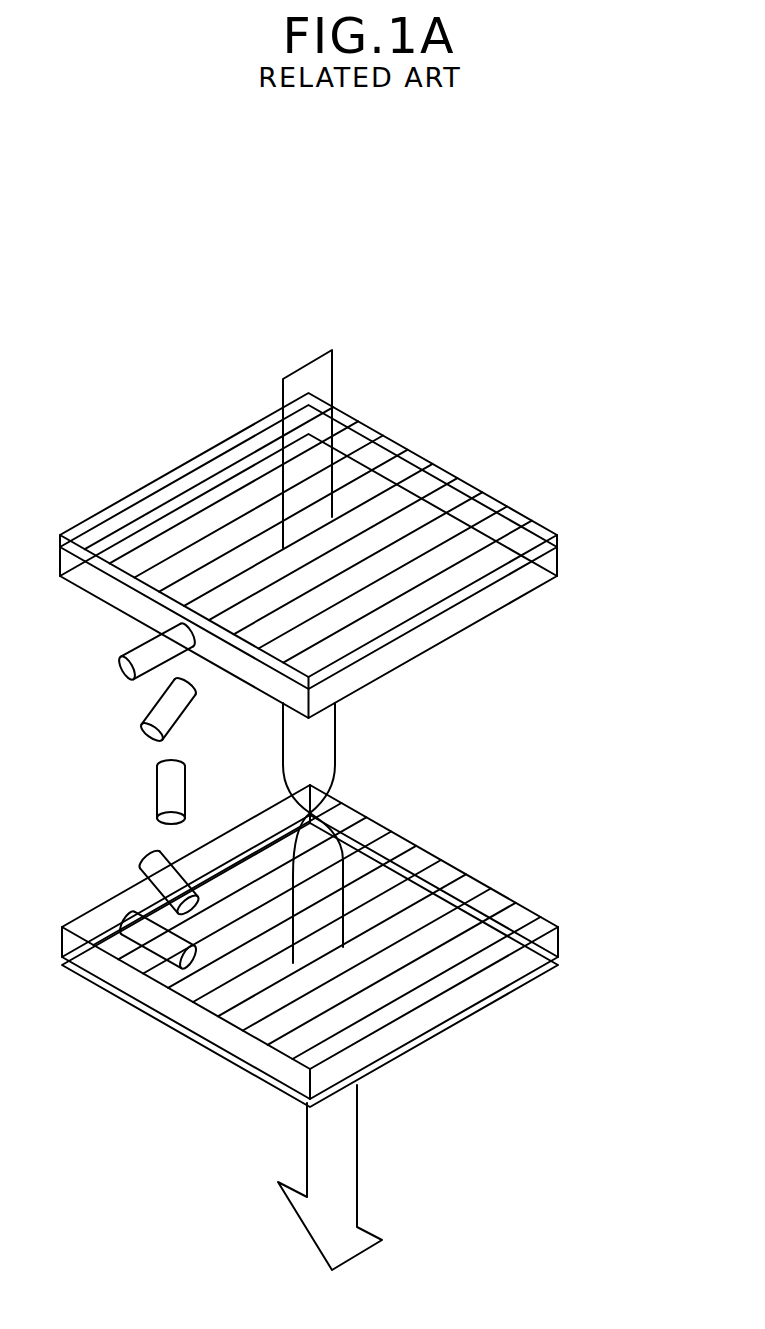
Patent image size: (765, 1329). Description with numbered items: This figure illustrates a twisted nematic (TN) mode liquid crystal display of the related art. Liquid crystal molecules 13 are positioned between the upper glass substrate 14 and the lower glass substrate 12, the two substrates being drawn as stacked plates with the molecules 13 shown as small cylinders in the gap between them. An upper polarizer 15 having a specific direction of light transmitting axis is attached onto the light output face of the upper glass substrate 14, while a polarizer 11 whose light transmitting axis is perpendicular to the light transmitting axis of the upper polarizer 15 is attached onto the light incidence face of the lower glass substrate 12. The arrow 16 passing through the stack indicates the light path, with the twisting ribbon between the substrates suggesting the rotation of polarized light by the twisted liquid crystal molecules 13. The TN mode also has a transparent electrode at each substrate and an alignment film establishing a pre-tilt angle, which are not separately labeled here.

The polarizer 11 is at (557, 533).
The lower glass substrate 12 is at (557, 555).
The liquid crystal molecules 13 is at (157, 797).
The upper glass substrate 14 is at (557, 937).
The upper polarizer 15 is at (557, 960).
The light path arrow 16 is at (282, 388).